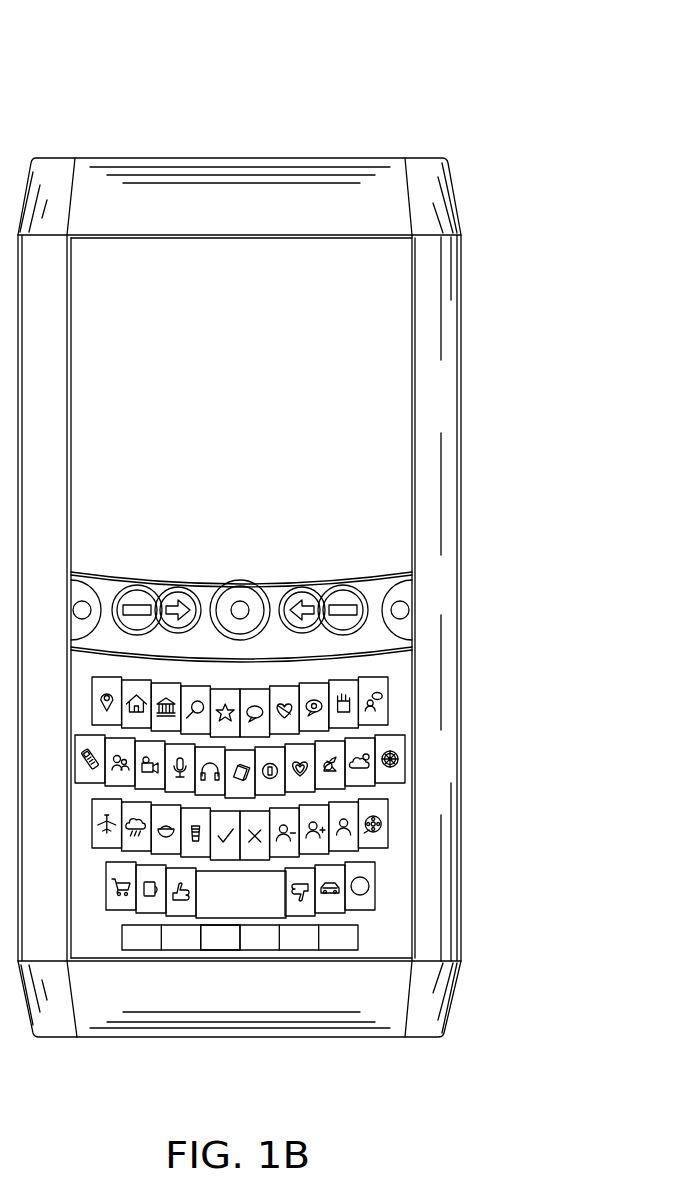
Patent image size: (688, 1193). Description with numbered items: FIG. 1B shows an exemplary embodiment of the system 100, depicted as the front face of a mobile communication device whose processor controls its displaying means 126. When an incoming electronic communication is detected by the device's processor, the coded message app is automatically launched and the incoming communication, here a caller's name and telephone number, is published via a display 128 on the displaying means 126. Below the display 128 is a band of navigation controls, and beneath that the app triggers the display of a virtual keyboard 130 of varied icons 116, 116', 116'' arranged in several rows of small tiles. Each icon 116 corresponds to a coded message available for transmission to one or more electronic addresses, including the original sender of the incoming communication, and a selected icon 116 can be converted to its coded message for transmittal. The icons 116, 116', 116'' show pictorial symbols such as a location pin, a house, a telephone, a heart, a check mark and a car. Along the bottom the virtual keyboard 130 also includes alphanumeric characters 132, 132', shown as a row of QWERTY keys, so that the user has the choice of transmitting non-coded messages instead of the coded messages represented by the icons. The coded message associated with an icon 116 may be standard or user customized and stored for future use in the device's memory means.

The system 100 is at (108, 62).
The displaying means 126 is at (412, 318).
The display 128 is at (383, 422).
The virtual keyboard 130 is at (411, 571).
The icon 116 is at (317, 766).
The icon 116' is at (328, 829).
The icon 116'' is at (332, 890).
The alphanumeric character 132 is at (198, 1015).
The alphanumeric character 132' is at (200, 1008).